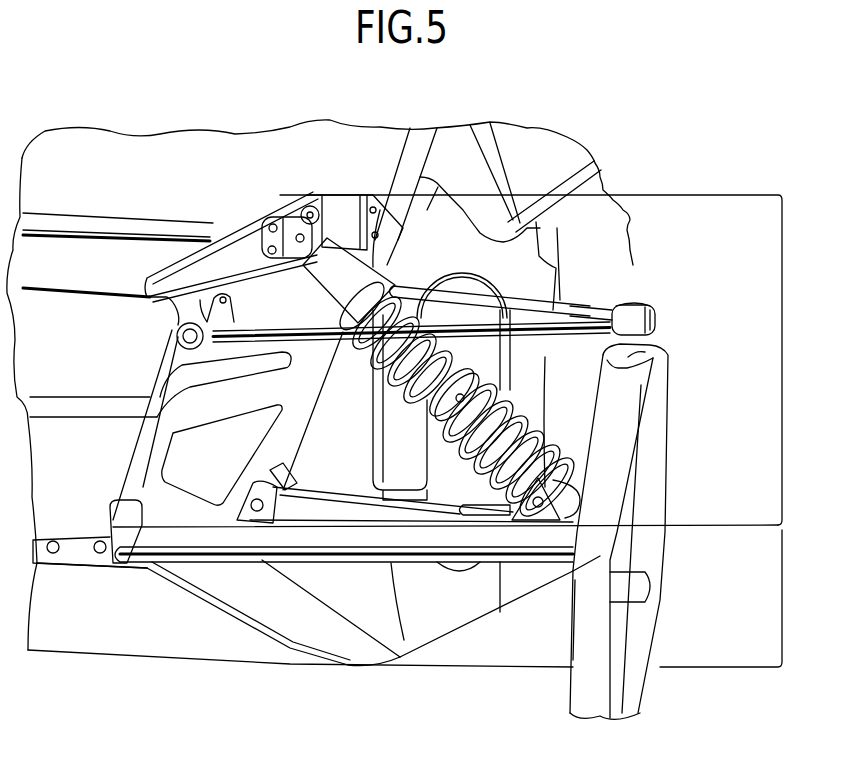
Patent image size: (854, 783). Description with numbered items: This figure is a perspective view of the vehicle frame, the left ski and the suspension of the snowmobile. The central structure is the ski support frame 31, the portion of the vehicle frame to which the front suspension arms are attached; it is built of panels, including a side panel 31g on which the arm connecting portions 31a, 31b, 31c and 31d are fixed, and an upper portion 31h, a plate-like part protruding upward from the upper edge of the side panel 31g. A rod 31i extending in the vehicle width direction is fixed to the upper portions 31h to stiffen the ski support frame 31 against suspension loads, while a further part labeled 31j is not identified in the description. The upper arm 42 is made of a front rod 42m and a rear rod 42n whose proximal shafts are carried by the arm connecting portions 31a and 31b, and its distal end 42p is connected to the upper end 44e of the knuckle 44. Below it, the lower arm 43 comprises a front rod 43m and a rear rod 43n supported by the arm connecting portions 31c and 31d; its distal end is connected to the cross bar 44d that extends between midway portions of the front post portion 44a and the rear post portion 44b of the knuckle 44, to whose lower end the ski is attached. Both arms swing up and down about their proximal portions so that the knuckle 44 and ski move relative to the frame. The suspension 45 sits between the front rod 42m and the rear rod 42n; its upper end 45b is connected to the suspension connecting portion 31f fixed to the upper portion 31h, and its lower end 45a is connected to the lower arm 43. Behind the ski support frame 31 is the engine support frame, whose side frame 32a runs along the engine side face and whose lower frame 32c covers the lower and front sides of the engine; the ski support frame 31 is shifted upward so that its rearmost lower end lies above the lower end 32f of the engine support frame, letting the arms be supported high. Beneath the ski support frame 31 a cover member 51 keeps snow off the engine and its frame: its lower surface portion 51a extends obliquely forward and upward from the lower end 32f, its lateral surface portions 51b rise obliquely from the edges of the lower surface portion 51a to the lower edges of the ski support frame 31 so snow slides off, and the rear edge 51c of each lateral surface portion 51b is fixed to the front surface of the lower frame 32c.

The ski support frame 31 is at (782, 360).
The arm connecting portion 31a is at (237, 302).
The arm connecting portion 31b is at (380, 267).
The arm connecting portion 31c is at (140, 517).
The arm connecting portion 31d is at (290, 487).
The suspension connecting portion 31f is at (275, 226).
The side panel 31g is at (312, 382).
The upper portion 31h is at (217, 243).
The rod 31i is at (122, 224).
The frame member 31j is at (97, 300).
The side frame 32a is at (465, 243).
The lower frame 32c is at (303, 572).
The lower end of the engine support frame 32f is at (418, 650).
The upper arm 42 is at (525, 297).
The front rod 42m is at (513, 327).
The rear rod 42n is at (580, 307).
The distal end of the upper arm 42p is at (638, 307).
The lower arm 43 is at (420, 565).
The front rod 43m is at (193, 552).
The rear rod 43n is at (402, 512).
The knuckle 44 is at (590, 382).
The front post portion 44a is at (572, 655).
The rear post portion 44b is at (660, 450).
The cross bar 44d is at (643, 590).
The upper end of the knuckle 44e is at (678, 327).
The suspension 45 is at (352, 232).
The lower end of the suspension 45a is at (567, 482).
The upper end of the suspension 45b is at (347, 240).
The cover member 51 is at (782, 595).
The lower surface portion 51a is at (197, 640).
The lateral surface portion 51b is at (323, 640).
The rear edge of the lateral surface portion 51c is at (398, 658).